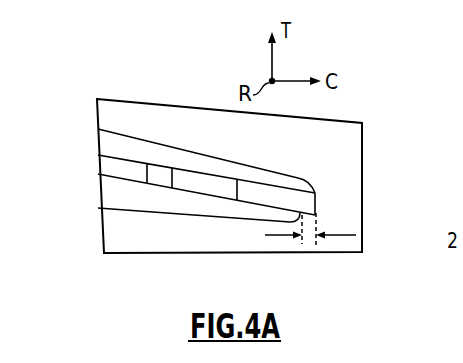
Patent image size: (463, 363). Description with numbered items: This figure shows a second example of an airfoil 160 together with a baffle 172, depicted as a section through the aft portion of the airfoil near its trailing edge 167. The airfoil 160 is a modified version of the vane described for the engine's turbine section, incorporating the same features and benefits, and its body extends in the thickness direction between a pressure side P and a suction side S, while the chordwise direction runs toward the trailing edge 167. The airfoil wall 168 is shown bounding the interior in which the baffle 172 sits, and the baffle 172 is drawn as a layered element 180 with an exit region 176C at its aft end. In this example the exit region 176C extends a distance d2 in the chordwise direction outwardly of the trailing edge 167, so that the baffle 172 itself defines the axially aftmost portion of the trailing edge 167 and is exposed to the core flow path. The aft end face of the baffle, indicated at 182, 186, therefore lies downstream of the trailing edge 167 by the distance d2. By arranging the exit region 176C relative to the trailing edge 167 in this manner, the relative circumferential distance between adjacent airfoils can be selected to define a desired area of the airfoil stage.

The airfoil 160 is at (113, 108).
The airfoil wall 168 is at (138, 154).
The baffle 172 is at (117, 168).
The band segments 180 is at (249, 189).
The exit region 176C is at (263, 197).
The trailing edge 167 is at (308, 187).
The end face 182 is at (384, 196).
The end face surface 186 is at (316, 204).
The suction side S is at (131, 134).
The pressure side P is at (128, 210).
The distance d2 is at (342, 238).